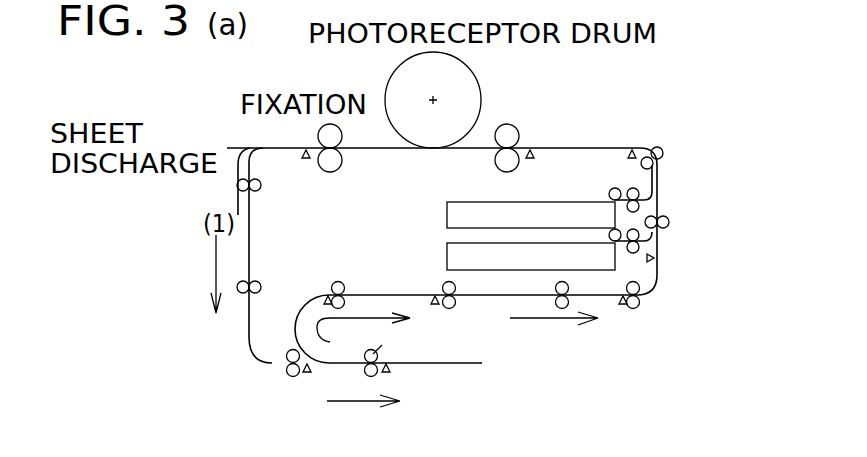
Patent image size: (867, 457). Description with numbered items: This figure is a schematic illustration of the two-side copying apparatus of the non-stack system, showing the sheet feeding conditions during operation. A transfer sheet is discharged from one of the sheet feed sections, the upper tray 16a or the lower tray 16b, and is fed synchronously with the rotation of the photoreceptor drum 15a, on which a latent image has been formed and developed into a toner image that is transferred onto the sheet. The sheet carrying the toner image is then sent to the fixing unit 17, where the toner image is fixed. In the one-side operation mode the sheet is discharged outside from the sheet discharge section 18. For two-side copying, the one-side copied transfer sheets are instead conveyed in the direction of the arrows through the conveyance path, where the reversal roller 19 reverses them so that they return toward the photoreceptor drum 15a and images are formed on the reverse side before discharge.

The photoreceptor drum 15a is at (478, 92).
The sheet feed section 16a is at (447, 214).
The sheet feed section 16b is at (447, 258).
The fixing unit 17 is at (334, 172).
The sheet discharge section 18 is at (228, 177).
The reversal roller 19 is at (623, 324).